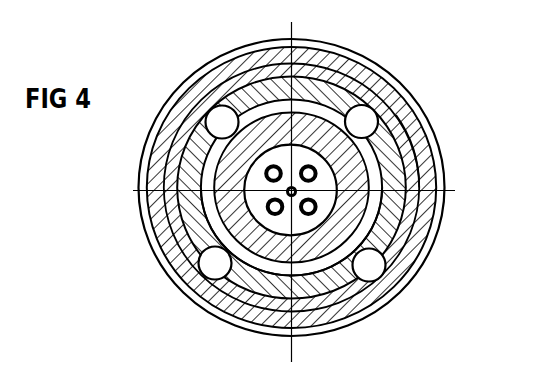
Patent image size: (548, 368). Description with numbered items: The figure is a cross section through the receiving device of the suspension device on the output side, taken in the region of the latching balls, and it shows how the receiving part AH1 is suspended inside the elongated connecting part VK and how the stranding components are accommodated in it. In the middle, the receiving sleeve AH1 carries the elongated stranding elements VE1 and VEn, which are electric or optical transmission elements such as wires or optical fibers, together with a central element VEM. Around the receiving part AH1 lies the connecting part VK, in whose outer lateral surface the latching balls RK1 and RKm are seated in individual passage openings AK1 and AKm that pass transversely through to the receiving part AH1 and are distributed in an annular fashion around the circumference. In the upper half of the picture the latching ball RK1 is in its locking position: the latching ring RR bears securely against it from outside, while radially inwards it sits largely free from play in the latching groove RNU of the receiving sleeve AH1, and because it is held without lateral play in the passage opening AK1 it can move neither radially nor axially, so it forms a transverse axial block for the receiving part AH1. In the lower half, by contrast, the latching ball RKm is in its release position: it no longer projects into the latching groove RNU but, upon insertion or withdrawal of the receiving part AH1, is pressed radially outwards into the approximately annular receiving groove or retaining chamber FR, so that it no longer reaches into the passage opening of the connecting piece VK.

The latching ring RR is at (343, 62).
The receiving groove or retaining chamber FR is at (328, 302).
The latching groove RNU is at (240, 74).
The receiving part AH1 is at (412, 207).
The latching ball RK1 is at (362, 88).
The latching ball RKm is at (208, 287).
The passage opening AK1 is at (377, 117).
The passage opening AKm is at (200, 259).
The connecting part VK is at (412, 143).
The stranding element VE1 is at (317, 169).
The stranding element VEn is at (264, 172).
The central distributor element VEM is at (185, 210).